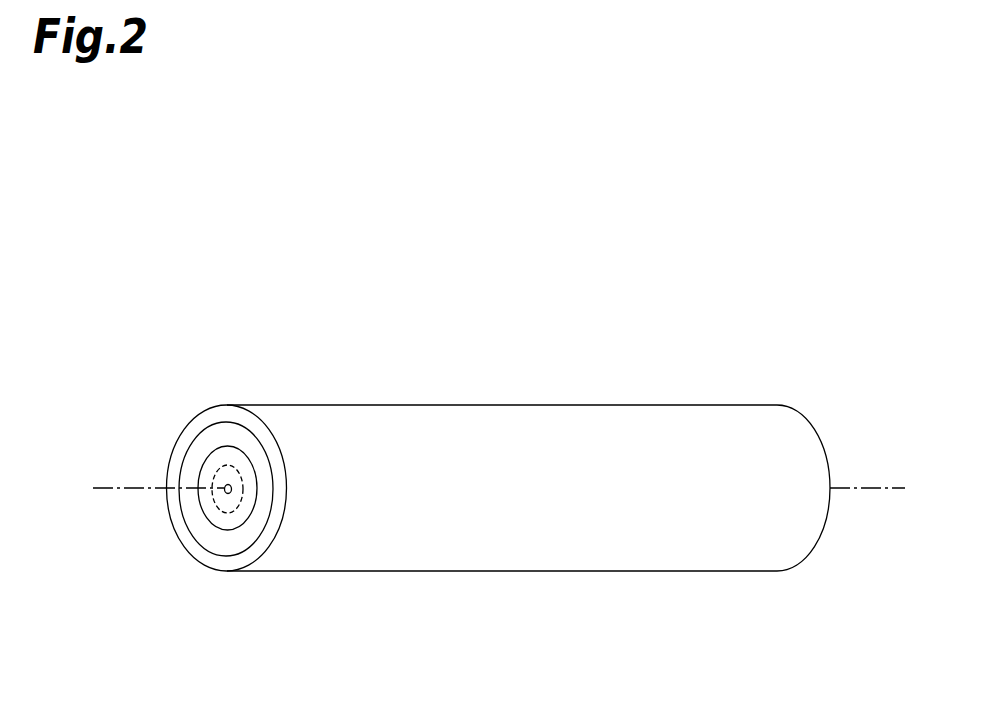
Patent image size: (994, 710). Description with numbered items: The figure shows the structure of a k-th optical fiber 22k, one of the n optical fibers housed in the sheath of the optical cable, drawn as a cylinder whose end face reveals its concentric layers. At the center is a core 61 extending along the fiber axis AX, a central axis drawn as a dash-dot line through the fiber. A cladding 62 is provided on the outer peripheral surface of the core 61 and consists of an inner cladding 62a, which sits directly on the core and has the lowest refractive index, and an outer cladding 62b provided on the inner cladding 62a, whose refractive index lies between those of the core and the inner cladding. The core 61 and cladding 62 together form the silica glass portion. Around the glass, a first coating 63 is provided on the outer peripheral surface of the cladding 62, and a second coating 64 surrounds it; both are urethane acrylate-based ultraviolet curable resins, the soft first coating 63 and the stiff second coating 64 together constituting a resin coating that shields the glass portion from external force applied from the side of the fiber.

The optical fiber 22k is at (540, 330).
The fiber axis AX is at (520, 488).
The core 61 is at (216, 494).
The cladding 62 is at (98, 397).
The inner cladding 62a is at (217, 473).
The outer cladding 62b is at (226, 458).
The first coating 63 is at (208, 535).
The second coating 64 is at (212, 562).